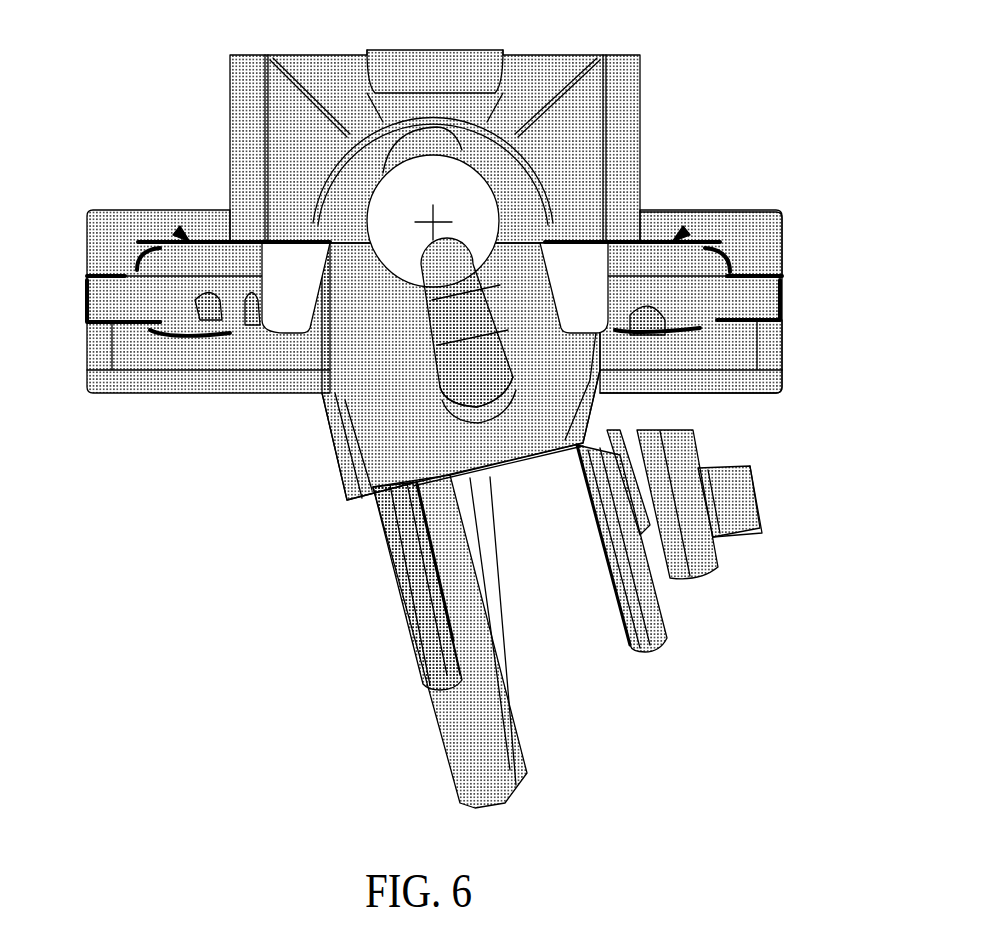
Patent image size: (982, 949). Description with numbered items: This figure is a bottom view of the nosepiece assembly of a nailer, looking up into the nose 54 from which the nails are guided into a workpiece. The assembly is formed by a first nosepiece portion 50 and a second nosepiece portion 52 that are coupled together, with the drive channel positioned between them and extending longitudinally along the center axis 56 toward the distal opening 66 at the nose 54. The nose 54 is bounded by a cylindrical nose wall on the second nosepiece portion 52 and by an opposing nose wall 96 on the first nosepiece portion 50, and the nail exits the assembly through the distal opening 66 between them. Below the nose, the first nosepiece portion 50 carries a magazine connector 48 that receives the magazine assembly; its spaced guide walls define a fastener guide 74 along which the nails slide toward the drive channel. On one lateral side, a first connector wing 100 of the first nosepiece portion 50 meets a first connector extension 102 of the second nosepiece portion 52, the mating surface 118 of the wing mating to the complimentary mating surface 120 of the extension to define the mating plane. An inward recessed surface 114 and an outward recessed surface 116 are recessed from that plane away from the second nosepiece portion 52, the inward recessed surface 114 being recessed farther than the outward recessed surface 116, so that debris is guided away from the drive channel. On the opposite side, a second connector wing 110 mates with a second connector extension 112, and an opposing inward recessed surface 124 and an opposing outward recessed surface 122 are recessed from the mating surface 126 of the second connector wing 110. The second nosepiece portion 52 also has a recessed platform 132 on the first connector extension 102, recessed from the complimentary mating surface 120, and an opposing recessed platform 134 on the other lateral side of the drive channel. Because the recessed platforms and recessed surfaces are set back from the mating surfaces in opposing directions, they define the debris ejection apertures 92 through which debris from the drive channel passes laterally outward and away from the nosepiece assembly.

The magazine connector 48 is at (372, 531).
The first nosepiece portion 50 is at (763, 393).
The second nosepiece portion 52 is at (760, 227).
The nose 54 is at (520, 135).
The center axis 56 is at (438, 222).
The distal opening 66 is at (380, 170).
The fastener guide 74 is at (571, 678).
The debris ejection aperture 92 is at (178, 232).
The opposing nose wall 96 is at (390, 290).
The first connector wing 100 is at (747, 353).
The first connector extension 102 is at (763, 237).
The second connector wing 110 is at (130, 350).
The second connector extension 112 is at (110, 225).
The inward recessed surface 114 is at (647, 312).
The outward recessed surface 116 is at (733, 307).
The mating surface 118 is at (747, 275).
The complimentary mating surface 120 is at (173, 298).
The opposing outward recessed surface 122 is at (213, 307).
The opposing inward recessed surface 124 is at (250, 300).
The mating surface 126 is at (137, 270).
The recessed platform 132 is at (655, 242).
The opposing recessed platform 134 is at (212, 242).